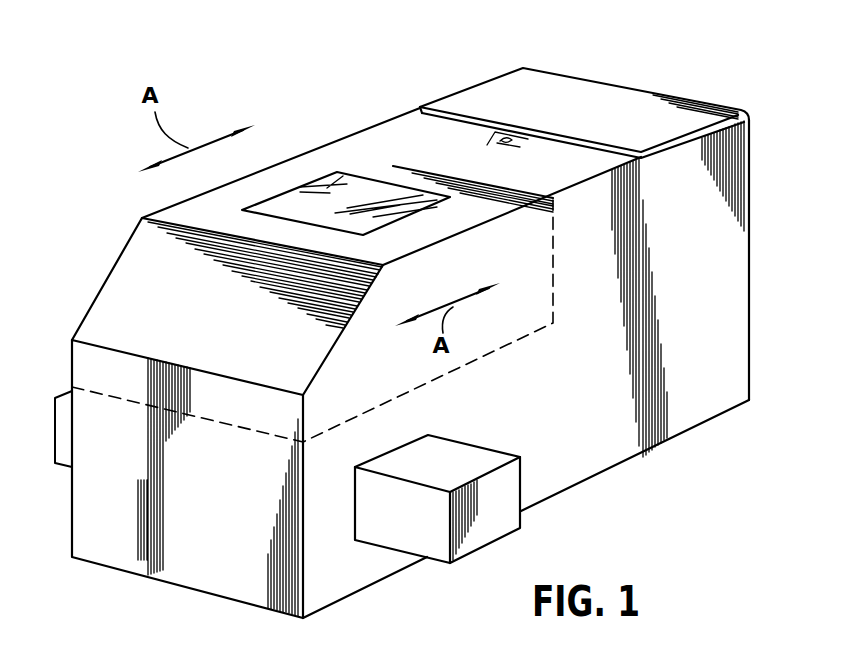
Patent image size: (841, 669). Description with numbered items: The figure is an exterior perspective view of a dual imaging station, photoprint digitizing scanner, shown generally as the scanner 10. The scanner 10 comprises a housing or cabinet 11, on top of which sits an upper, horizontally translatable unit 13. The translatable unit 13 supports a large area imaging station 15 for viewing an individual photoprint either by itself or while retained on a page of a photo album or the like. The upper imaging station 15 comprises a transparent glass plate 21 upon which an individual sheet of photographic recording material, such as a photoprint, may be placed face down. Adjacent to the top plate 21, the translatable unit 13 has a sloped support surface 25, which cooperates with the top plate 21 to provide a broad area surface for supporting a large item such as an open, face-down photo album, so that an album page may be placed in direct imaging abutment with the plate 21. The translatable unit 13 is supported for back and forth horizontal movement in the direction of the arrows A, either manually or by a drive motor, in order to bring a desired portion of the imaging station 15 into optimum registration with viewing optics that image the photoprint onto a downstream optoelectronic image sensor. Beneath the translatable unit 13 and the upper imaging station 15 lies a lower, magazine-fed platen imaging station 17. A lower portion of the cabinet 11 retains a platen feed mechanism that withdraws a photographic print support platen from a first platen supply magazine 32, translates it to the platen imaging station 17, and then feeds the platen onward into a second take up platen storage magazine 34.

The scanner 10 is at (655, 72).
The housing or cabinet 11 is at (714, 262).
The upper horizontally translatable unit 13 is at (548, 246).
The large area imaging station 15 is at (304, 193).
The magazine-fed platen imaging station 17 is at (146, 530).
The transparent plate 21 is at (401, 195).
The sloped support surface 25 is at (118, 300).
The first platen supply magazine 32 is at (61, 465).
The second take up platen storage magazine 34 is at (423, 537).